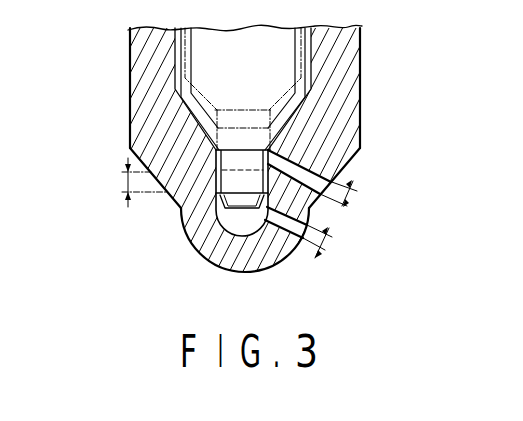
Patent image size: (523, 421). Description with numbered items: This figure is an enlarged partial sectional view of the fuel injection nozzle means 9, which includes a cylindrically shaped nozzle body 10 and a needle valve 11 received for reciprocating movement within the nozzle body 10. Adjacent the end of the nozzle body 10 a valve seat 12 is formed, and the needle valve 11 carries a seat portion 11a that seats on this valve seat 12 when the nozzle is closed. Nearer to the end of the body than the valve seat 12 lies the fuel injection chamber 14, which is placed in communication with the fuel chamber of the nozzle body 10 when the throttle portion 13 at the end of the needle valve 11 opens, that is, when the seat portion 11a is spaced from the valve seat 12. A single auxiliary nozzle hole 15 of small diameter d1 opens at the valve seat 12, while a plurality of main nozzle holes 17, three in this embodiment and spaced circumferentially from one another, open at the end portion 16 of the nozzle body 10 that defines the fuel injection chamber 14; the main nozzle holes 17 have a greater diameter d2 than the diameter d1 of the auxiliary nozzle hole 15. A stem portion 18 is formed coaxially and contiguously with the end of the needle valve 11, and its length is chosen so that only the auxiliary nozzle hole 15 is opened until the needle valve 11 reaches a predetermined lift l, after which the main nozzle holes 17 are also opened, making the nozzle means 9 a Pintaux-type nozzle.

The fuel injection nozzle means 9 is at (364, 108).
The nozzle body 10 is at (138, 70).
The needle valve 11 is at (290, 57).
The seat portion 11a is at (356, 146).
The valve seat 12 is at (172, 120).
The throttle portion 13 is at (338, 162).
The fuel injection chamber 14 is at (227, 237).
The auxiliary nozzle hole 15 is at (312, 188).
The end portion 16 is at (195, 261).
The main nozzle holes 17 is at (278, 238).
The stem portion 18 is at (233, 217).
The needle lift l is at (126, 183).
The diameter of the auxiliary nozzle hole d1 is at (350, 199).
The diameter of the main nozzle holes d2 is at (318, 257).